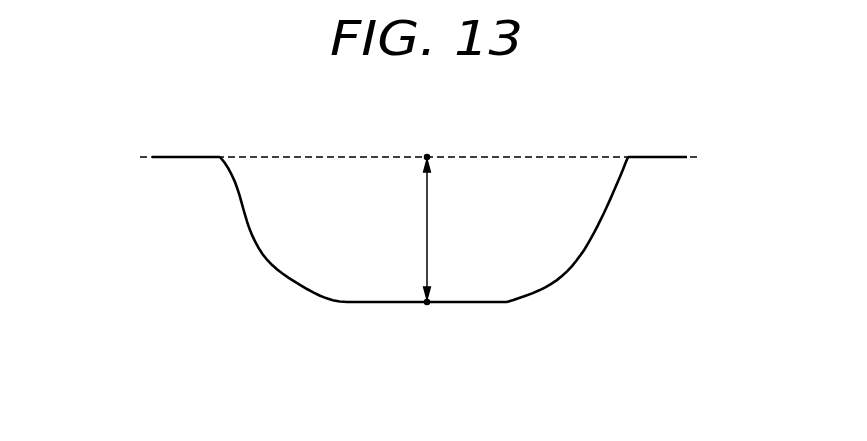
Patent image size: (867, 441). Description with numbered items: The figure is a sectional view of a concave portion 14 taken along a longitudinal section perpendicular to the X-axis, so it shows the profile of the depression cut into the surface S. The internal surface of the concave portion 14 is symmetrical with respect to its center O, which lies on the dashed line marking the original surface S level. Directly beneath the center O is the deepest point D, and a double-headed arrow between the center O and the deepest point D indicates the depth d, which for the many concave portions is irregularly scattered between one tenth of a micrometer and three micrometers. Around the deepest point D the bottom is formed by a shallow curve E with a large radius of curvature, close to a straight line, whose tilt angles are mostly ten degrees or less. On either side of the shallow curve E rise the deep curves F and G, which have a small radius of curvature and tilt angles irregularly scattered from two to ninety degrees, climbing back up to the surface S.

The concave portion 14 is at (424, 230).
The reflection surface S is at (653, 157).
The deep curve F is at (250, 231).
The deep curve G is at (578, 258).
The shallow curve E is at (392, 302).
The center of the concave portion O is at (426, 145).
The deepest point D is at (426, 316).
The depth d is at (435, 229).